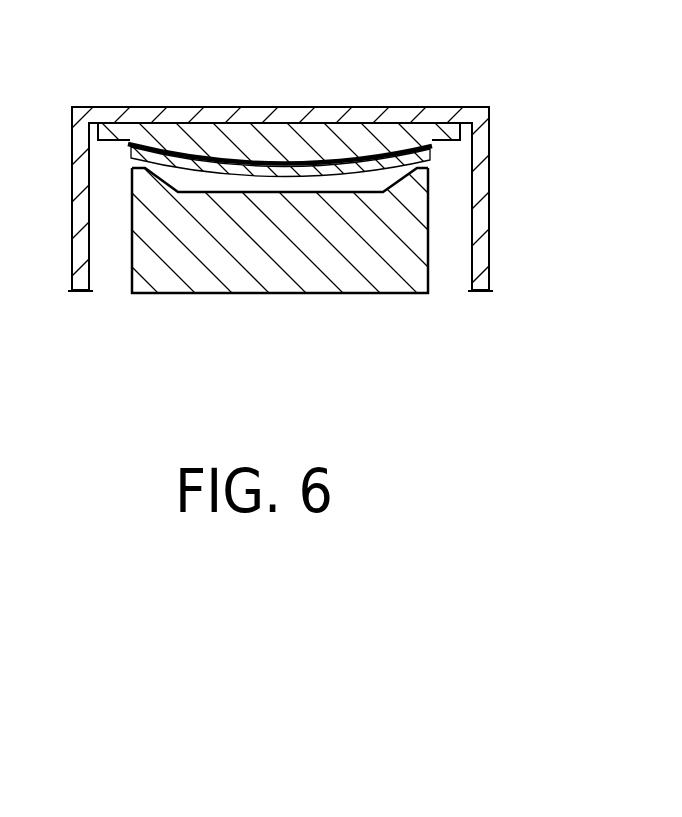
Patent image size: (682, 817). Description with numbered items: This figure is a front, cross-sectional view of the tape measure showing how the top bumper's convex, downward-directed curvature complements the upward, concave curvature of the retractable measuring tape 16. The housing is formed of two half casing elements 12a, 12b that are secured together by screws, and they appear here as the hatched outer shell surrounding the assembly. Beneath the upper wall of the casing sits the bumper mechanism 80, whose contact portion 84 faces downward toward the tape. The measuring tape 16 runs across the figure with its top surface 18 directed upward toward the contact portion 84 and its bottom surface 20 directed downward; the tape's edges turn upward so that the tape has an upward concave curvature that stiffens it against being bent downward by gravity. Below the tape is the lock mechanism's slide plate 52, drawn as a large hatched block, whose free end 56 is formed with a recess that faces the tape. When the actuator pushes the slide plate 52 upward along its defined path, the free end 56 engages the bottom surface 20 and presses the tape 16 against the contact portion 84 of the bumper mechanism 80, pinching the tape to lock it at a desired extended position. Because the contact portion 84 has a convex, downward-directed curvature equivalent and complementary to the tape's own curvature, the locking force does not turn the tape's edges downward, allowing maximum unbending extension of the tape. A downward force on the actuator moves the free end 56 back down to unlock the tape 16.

The half casing element 12a is at (388, 112).
The half casing element 12b is at (147, 113).
The contact portion 84 is at (271, 152).
The top surface 18 is at (425, 148).
The bottom surface 20 is at (424, 152).
The free end 56 is at (285, 205).
The slide plate 52 is at (317, 250).
The retractable measuring tape 16 is at (224, 172).
The bumper mechanism 80 is at (115, 143).